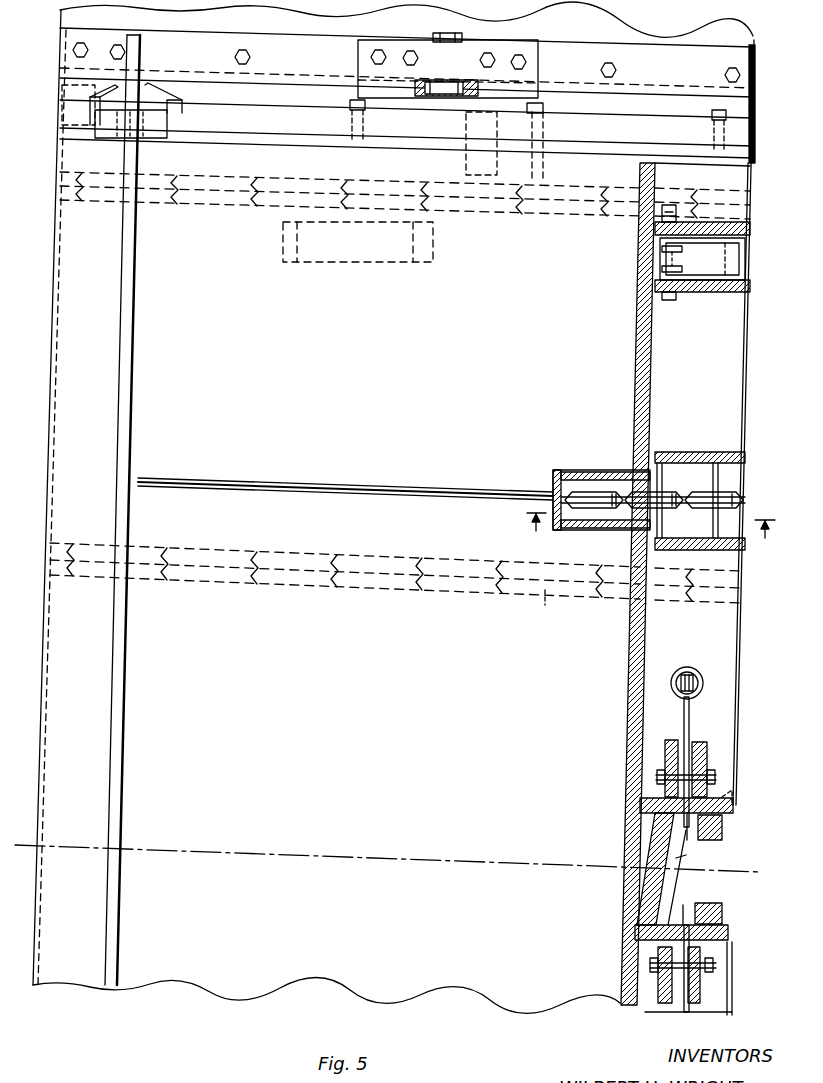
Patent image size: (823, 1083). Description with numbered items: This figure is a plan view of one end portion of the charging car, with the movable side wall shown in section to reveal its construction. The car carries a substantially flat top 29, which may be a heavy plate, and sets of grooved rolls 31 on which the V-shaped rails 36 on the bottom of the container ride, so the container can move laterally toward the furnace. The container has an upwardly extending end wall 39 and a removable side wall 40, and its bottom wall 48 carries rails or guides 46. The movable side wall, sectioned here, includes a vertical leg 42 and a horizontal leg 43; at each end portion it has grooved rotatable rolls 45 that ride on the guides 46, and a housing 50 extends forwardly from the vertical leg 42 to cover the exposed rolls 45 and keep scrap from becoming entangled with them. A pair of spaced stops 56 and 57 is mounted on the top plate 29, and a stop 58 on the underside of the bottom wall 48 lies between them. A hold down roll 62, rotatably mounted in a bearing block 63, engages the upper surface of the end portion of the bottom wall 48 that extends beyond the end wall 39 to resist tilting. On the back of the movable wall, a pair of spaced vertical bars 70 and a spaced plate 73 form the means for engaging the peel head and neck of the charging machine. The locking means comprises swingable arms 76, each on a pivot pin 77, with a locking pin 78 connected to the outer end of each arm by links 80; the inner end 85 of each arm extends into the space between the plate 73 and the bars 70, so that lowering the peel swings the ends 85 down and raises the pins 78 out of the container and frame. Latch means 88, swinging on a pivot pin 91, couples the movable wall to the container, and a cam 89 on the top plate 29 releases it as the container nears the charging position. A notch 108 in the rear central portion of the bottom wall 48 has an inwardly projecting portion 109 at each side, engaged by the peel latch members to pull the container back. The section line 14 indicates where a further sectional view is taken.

The section line 14 is at (651, 536).
The flat top 29 is at (755, 50).
The rolls 31 is at (460, 558).
The V-shaped rails 36 is at (537, 213).
The end wall 39 is at (315, 147).
The removable side wall 40 is at (122, 356).
The vertical leg 42 is at (628, 690).
The horizontal leg 43 is at (706, 417).
The rotatable rolls 45 is at (674, 494).
The rails or guides 46 is at (422, 483).
The bottom wall 48 is at (740, 660).
The housing 50 is at (568, 472).
The stop 56 is at (62, 95).
The stop 57 is at (545, 183).
The stop 58 is at (462, 160).
The hold down roll 62 is at (443, 97).
The bearing block 63 is at (488, 52).
The vertical bars 70 is at (724, 835).
The plate 73 is at (663, 843).
The swingable arms 76 is at (692, 722).
The pivot pin 77 is at (656, 778).
The locking pin 78 is at (697, 672).
The links 80 is at (680, 674).
The inner end of arm 85 is at (683, 835).
The latch means 88 is at (748, 262).
The cam 89 is at (400, 262).
The pivot pin 91 is at (672, 300).
The notch 108 is at (676, 858).
The inwardly projecting portion 109 is at (722, 792).